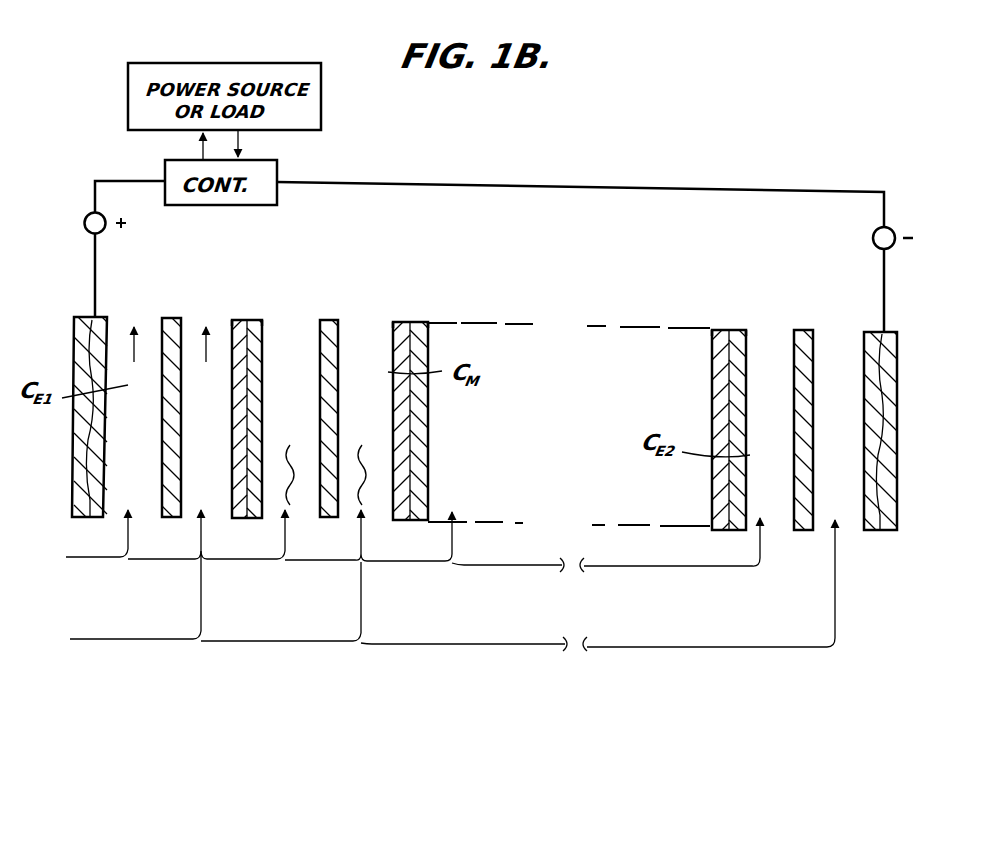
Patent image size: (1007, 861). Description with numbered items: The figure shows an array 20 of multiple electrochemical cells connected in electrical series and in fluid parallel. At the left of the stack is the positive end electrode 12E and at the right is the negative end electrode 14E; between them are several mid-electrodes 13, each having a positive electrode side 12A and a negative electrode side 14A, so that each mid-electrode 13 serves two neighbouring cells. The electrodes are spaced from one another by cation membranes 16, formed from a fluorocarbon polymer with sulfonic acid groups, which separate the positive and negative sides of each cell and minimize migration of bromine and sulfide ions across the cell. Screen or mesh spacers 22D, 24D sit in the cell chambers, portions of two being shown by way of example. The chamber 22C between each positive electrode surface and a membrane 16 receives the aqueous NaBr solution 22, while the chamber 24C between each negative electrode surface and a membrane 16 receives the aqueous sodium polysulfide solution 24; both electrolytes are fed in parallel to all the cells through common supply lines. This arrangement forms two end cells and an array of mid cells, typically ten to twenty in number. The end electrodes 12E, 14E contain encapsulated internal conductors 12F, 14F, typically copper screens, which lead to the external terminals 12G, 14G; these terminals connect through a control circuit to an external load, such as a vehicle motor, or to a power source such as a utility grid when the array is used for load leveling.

The external terminal 12G is at (86, 219).
The internal conductor 12F is at (95, 276).
The end electrode 12E is at (76, 342).
The cation membrane 16 is at (169, 318).
The bipolar electrode 13 is at (247, 314).
The negative electrode side 14A is at (232, 322).
The positive electrode side 12A is at (264, 322).
The array 20 is at (462, 258).
The chamber 22C is at (213, 405).
The chamber 24C is at (287, 405).
The screen or mesh spacer 22D is at (298, 467).
The screen or mesh spacer 24D is at (360, 458).
The aqueous solution of NaBr 22 is at (388, 552).
The aqueous Na2Sx solution 24 is at (425, 594).
The external terminal 14G is at (873, 238).
The internal conductor 14F is at (884, 273).
The end electrode 14E is at (866, 334).